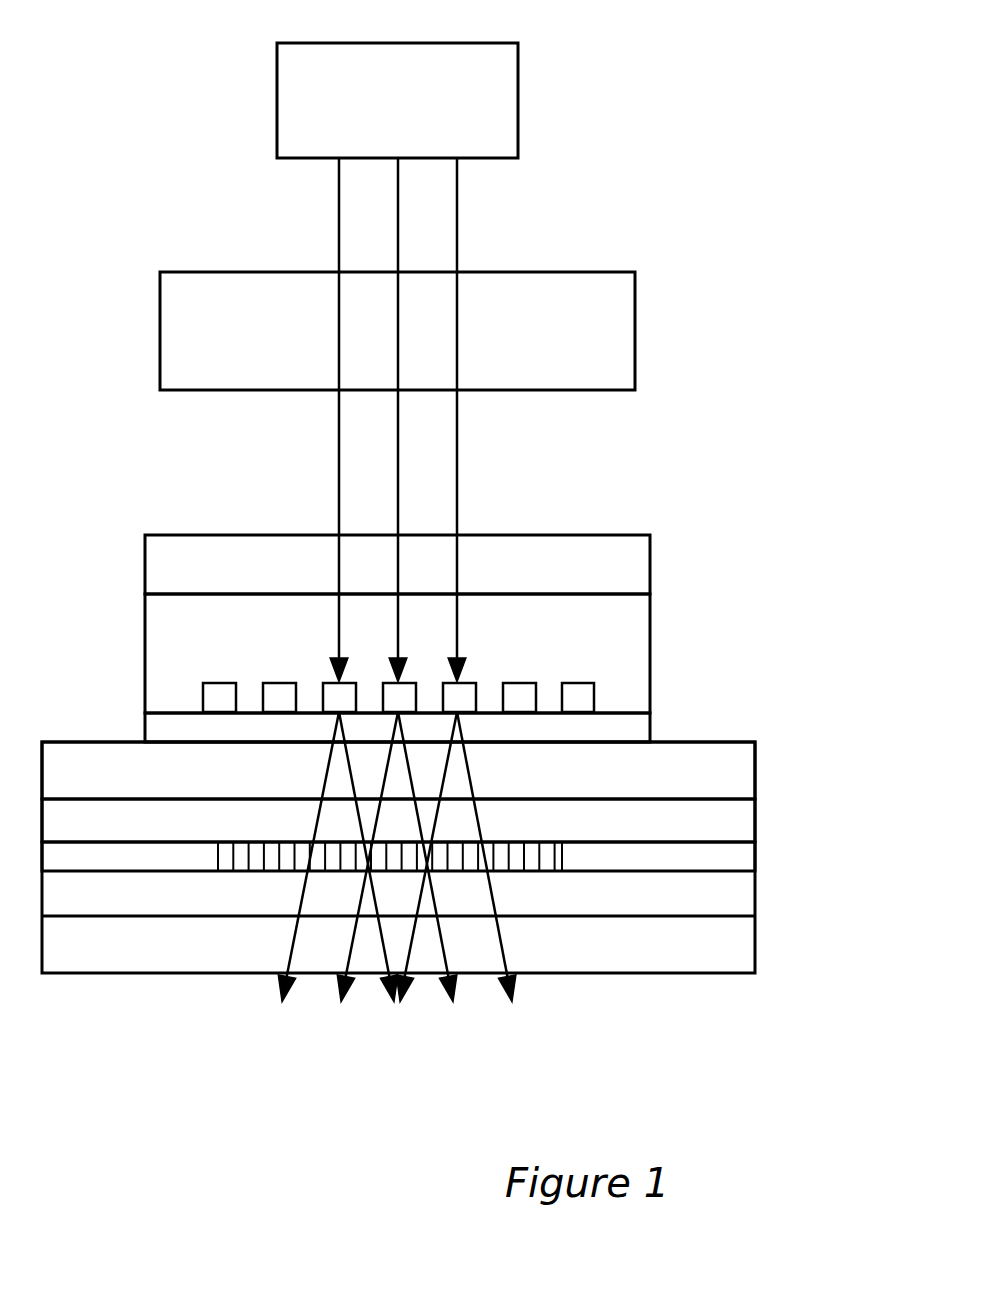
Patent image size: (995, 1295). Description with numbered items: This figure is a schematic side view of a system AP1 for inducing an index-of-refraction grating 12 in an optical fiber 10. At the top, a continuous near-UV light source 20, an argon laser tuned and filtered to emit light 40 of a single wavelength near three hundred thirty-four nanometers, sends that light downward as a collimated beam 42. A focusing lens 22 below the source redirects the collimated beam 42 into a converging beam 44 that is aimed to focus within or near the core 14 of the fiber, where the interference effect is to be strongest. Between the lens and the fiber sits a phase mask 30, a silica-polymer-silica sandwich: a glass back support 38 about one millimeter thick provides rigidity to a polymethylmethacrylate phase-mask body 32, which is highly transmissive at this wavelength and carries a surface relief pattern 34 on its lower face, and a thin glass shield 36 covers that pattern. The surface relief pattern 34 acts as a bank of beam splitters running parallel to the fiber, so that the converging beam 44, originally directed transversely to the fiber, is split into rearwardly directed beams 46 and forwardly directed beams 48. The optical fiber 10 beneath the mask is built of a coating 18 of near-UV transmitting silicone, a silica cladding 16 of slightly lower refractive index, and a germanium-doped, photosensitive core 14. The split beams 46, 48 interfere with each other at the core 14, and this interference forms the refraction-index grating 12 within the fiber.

The system for inducing a grating AP1 is at (200, 110).
The continuous near-UV light source 20 is at (397, 100).
The focusing lens 22 is at (397, 331).
The light 40 is at (468, 230).
The collimated beam 42 is at (339, 243).
The converging beam 44 is at (339, 494).
The phase mask 30 is at (138, 581).
The glass back support 38 is at (397, 564).
The phase-mask body 32 is at (397, 653).
The surface relief pattern 34 is at (190, 688).
The glass shield 36 is at (145, 732).
The optical fiber 10 is at (89, 986).
The coating 18 is at (398, 770).
The cladding 16 is at (398, 820).
The core 14 is at (755, 855).
The index-of-refraction grating 12 is at (228, 871).
The rearwardly directed beam 46 is at (340, 1005).
The forwardly directed beam 48 is at (516, 1000).